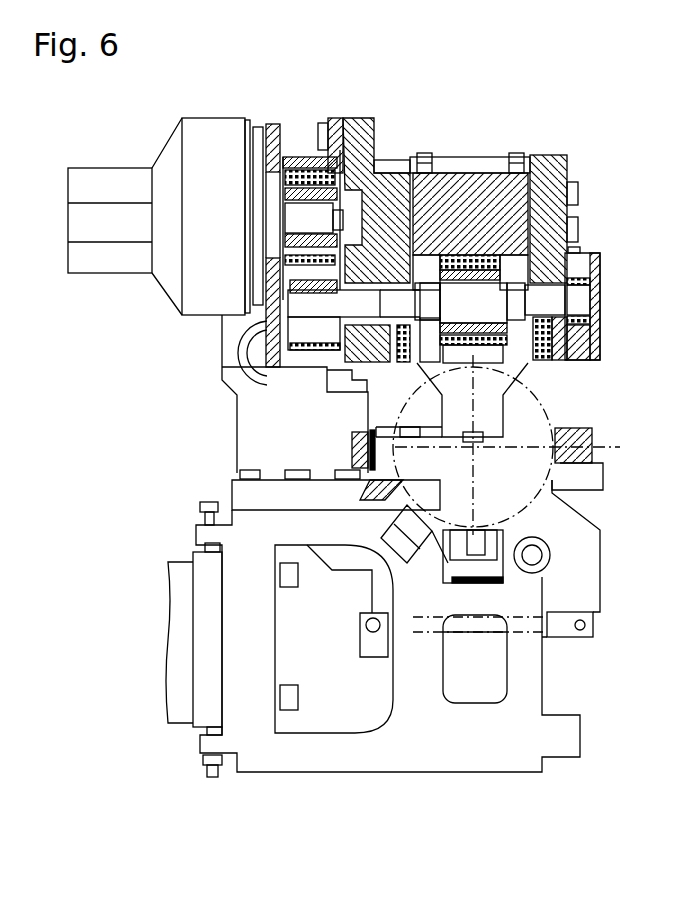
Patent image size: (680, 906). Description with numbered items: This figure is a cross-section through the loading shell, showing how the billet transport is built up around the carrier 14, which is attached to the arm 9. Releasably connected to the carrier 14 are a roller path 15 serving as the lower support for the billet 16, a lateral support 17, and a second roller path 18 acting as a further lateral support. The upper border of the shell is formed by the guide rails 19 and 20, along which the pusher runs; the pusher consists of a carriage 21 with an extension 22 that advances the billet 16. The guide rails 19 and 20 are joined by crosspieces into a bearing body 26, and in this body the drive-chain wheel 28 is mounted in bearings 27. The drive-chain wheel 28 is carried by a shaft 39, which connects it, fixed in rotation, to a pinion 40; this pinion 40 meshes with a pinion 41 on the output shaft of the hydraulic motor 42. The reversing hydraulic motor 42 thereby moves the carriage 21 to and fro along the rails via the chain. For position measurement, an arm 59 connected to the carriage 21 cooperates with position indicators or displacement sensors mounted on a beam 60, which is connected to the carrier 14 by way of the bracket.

The arm 9 is at (180, 648).
The carrier 14 is at (417, 732).
The roller path 15 is at (450, 562).
The billet 16 is at (515, 492).
The lateral support 17 is at (363, 497).
The roller path 18 is at (592, 442).
The guide rail 19 is at (547, 360).
The guide rail 20 is at (405, 362).
The carriage 21 is at (518, 360).
The extension 22 is at (487, 413).
The bearing body 26 is at (474, 142).
The bearings 27 is at (330, 362).
The drive-chain wheel 28 is at (480, 290).
The shaft 39 is at (290, 302).
The pinion 40 is at (290, 345).
The pinion 41 is at (307, 182).
The hydraulic motor 42 is at (213, 177).
The arm 59 is at (420, 432).
The beam 60 is at (350, 447).